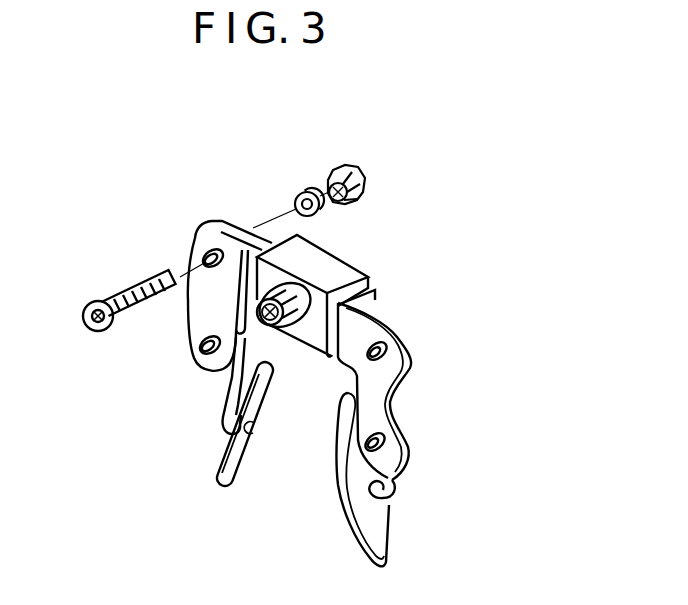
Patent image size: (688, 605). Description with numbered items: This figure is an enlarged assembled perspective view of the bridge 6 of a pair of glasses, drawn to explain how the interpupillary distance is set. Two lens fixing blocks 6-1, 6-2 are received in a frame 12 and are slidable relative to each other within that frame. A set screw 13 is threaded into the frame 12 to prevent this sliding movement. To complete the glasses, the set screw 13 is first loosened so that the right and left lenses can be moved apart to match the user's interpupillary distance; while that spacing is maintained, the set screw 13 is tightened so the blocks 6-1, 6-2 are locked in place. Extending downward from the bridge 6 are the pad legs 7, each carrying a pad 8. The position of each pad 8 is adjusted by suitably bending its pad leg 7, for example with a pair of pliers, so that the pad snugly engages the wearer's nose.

The bridge 6 is at (398, 258).
The lens fixing block 6-1 is at (402, 337).
The lens fixing block 6-2 is at (221, 221).
The pad leg 7 is at (230, 403).
The pad 8 is at (232, 484).
The frame 12 is at (341, 262).
The set screw 13 is at (273, 326).